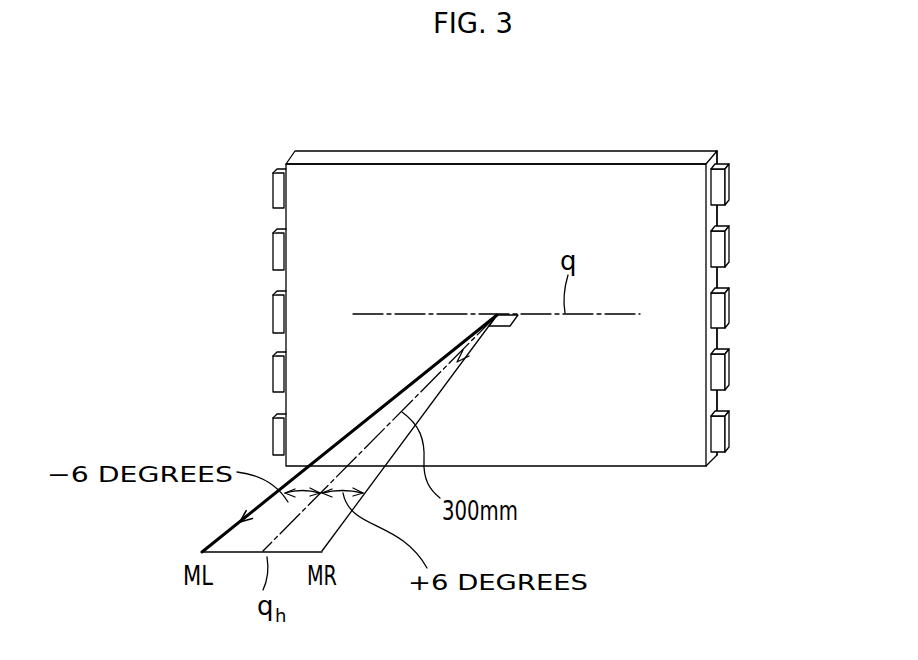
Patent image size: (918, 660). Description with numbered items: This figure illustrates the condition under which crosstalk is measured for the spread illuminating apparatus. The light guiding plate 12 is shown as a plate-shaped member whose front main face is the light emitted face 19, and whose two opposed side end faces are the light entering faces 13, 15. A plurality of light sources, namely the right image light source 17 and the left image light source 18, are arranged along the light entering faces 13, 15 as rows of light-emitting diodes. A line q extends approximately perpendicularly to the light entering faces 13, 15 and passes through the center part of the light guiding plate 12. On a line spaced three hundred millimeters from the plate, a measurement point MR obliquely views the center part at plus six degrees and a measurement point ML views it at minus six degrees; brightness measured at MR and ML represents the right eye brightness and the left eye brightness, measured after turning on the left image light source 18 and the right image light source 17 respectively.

The light guiding plate 12 is at (615, 155).
The light entering face 13 is at (716, 218).
The light entering face 15 is at (285, 217).
The right image light source 17 is at (729, 312).
The left image light source 18 is at (272, 313).
The light emitted face 19 is at (530, 168).